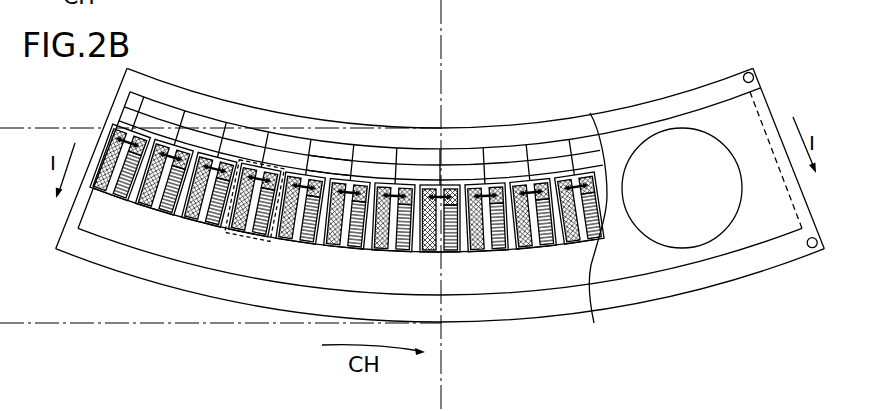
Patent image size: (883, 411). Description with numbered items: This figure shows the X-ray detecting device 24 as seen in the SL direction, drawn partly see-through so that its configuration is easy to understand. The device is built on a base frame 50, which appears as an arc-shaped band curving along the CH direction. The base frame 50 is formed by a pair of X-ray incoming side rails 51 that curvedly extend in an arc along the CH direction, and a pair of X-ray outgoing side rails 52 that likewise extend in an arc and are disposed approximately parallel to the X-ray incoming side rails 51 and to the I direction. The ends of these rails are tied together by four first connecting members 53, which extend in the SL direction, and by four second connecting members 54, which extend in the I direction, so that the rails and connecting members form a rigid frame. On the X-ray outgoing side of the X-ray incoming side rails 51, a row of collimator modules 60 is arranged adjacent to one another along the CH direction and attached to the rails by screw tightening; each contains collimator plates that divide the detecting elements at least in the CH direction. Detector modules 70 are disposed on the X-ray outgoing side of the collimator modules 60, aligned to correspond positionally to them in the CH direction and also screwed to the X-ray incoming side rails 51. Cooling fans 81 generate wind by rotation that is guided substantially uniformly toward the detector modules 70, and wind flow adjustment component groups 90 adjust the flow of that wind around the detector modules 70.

The X-ray detecting device 24 is at (511, 113).
The base frame 50 is at (726, 63).
The X-ray incoming side rail 51 is at (575, 125).
The X-ray outgoing side rail 52 is at (568, 305).
The first connecting member 53 is at (755, 72).
The second connecting member 54 is at (118, 108).
The collimator module 60 is at (338, 150).
The detector module 70 is at (318, 150).
The cooling fan 81 is at (700, 235).
The wind flow adjustment component group 90 is at (265, 164).